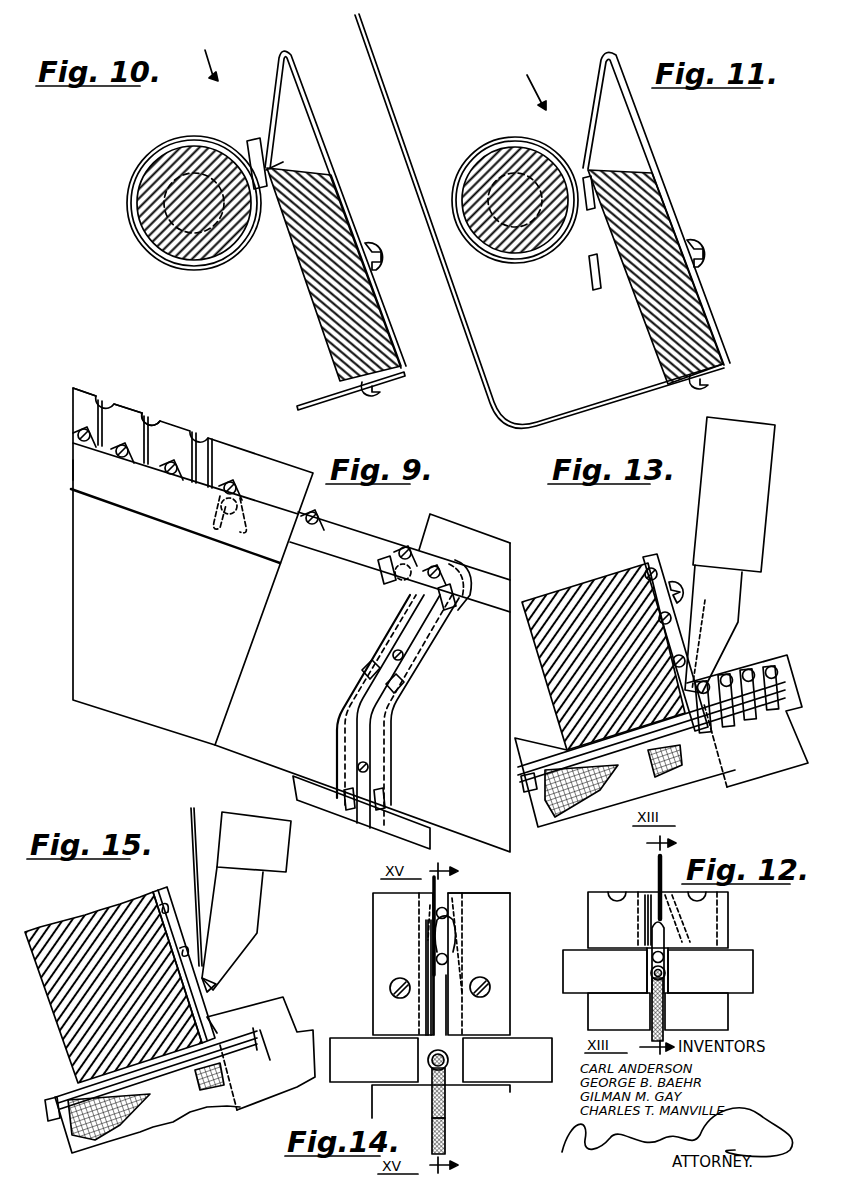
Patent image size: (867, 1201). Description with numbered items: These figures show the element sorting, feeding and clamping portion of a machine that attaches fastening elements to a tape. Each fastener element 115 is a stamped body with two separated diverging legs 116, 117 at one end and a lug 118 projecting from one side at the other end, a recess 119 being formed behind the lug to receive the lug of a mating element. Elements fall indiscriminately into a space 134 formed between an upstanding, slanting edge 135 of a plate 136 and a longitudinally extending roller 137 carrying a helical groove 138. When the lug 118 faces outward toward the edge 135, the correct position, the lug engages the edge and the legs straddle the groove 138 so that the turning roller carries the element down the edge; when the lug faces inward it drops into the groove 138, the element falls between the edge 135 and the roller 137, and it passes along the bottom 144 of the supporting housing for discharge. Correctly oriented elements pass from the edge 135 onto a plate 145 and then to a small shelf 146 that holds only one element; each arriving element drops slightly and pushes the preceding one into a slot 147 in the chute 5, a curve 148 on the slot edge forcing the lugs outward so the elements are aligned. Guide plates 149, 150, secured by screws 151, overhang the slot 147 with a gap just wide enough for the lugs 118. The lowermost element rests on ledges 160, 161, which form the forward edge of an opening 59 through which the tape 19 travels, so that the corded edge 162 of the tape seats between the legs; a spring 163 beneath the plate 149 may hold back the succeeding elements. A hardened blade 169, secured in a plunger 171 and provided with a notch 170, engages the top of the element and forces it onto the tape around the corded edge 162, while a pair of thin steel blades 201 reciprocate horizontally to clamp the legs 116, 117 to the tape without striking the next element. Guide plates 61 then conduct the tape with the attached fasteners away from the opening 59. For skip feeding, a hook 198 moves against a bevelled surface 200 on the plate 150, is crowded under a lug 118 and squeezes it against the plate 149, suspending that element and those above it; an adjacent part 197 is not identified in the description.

In FIG. 9, the chute 5 is at (291, 783).
In FIG. 15, the chute 5 is at (70, 923).
In FIG. 14, the chute 5 is at (495, 896).
In FIG. 14, the tape 19 is at (446, 1145).
In FIG. 14, the opening 59 is at (446, 1108).
In FIG. 12, the opening 59 is at (650, 1015).
In FIG. 13, the guide plates 61 is at (787, 657).
In FIG. 15, the guide plates 61 is at (283, 1013).
In FIG. 10, the fastener element 115 is at (270, 172).
In FIG. 11, the fastener element 115 is at (598, 289).
In FIG. 9, the fastener element 115 is at (128, 459).
In FIG. 9, the leg 116 is at (247, 523).
In FIG. 9, the leg 117 is at (211, 540).
In FIG. 11, the lug 118 is at (588, 262).
In FIG. 9, the lug 118 is at (238, 490).
In FIG. 14, the lug 118 is at (455, 957).
In FIG. 13, the recess 119 is at (640, 560).
In FIG. 10, the space 134 is at (244, 141).
In FIG. 10, the upstanding edge 135 is at (287, 54).
In FIG. 9, the upstanding edge 135 is at (74, 466).
In FIG. 10, the plate 136 is at (372, 337).
In FIG. 9, the plate 136 is at (192, 566).
In FIG. 10, the roller 137 is at (170, 259).
In FIG. 11, the roller 137 is at (492, 160).
In FIG. 9, the roller 137 is at (122, 411).
In FIG. 10, the helical groove 138 is at (150, 241).
In FIG. 11, the helical groove 138 is at (520, 262).
In FIG. 9, the helical groove 138 is at (150, 423).
In FIG. 11, the bottom of the supporting housing 144 is at (593, 398).
In FIG. 9, the plate 145 is at (322, 545).
In FIG. 9, the shelf 146 is at (446, 612).
In FIG. 9, the slot 147 is at (432, 633).
In FIG. 14, the slot 147 is at (448, 1020).
In FIG. 9, the curve 148 is at (458, 575).
In FIG. 15, the guide plate 149 is at (160, 889).
In FIG. 14, the guide plate 149 is at (510, 905).
In FIG. 14, the guide plate 150 is at (373, 903).
In FIG. 14, the screws 151 is at (392, 985).
In FIG. 12, the ledge 160 is at (675, 995).
In FIG. 14, the ledge 161 is at (415, 1086).
In FIG. 12, the ledge 161 is at (605, 1000).
In FIG. 15, the corded edge 162 is at (57, 1100).
In FIG. 14, the corded edge 162 is at (450, 1060).
In FIG. 12, the corded edge 162 is at (668, 973).
In FIG. 12, the spring 163 is at (678, 927).
In FIG. 13, the blade 169 is at (731, 610).
In FIG. 15, the blade 169 is at (256, 904).
In FIG. 15, the notch 170 is at (216, 987).
In FIG. 13, the plunger 171 is at (762, 540).
In FIG. 15, the plunger 171 is at (288, 853).
In FIG. 15, the needle wire 197 is at (200, 900).
In FIG. 15, the hook 198 is at (200, 950).
In FIG. 14, the bevelled surface 200 is at (430, 960).
In FIG. 14, the blades 201 is at (357, 1030).